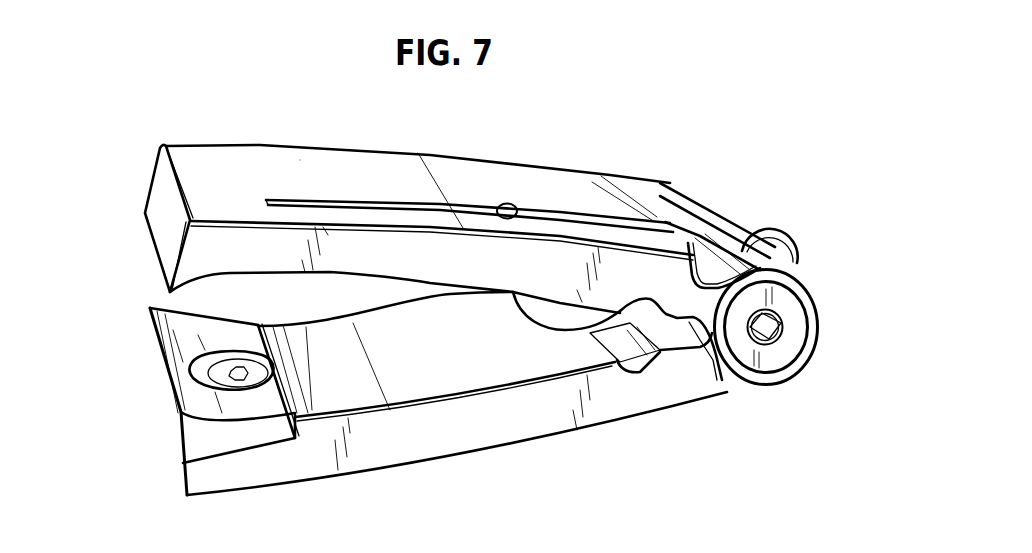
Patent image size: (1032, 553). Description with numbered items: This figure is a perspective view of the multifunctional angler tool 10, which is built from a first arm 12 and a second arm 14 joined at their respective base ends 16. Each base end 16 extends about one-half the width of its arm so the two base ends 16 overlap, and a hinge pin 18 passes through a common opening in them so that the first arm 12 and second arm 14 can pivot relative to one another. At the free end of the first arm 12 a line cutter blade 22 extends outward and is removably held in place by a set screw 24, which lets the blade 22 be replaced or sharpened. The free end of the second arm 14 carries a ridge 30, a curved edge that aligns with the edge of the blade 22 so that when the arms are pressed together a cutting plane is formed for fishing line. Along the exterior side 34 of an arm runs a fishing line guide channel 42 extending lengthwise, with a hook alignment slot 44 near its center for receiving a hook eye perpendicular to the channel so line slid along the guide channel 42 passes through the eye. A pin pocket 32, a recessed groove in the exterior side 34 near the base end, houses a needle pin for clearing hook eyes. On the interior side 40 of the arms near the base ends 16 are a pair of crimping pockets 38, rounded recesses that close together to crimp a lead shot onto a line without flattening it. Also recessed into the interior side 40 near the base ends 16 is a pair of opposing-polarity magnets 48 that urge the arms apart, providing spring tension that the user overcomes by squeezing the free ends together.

The tool 10 is at (716, 138).
The first arm 12 is at (470, 460).
The second arm 14 is at (270, 171).
The base end 16 is at (735, 238).
The hinge pin 18 is at (790, 320).
The line cutter blade 22 is at (176, 413).
The set screw 24 is at (251, 357).
The ridge 30 is at (146, 236).
The pin pocket 32 is at (675, 210).
The exterior side 34 is at (477, 192).
The crimping pocket 38 is at (641, 291).
The interior side 40 is at (447, 363).
The fishing line guide channel 42 is at (382, 193).
The hook alignment slot 44 is at (578, 206).
The magnet 48 is at (548, 310).